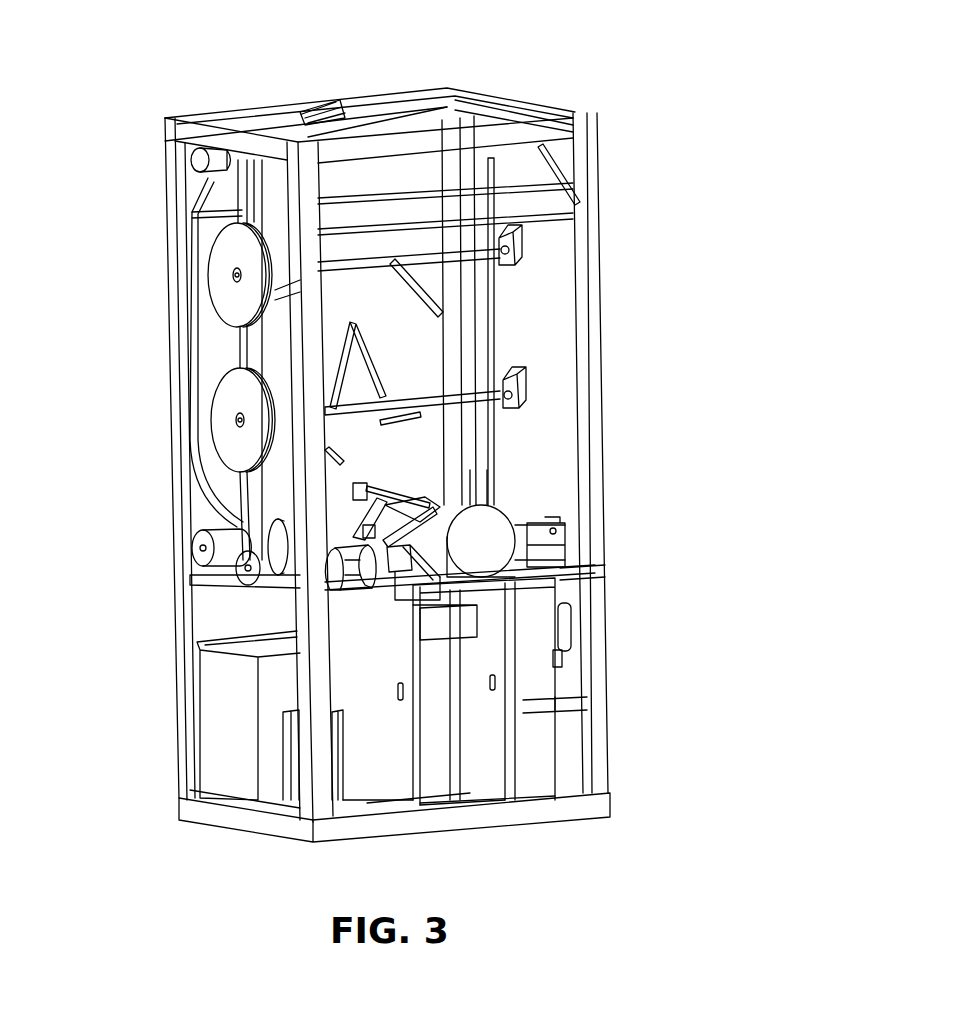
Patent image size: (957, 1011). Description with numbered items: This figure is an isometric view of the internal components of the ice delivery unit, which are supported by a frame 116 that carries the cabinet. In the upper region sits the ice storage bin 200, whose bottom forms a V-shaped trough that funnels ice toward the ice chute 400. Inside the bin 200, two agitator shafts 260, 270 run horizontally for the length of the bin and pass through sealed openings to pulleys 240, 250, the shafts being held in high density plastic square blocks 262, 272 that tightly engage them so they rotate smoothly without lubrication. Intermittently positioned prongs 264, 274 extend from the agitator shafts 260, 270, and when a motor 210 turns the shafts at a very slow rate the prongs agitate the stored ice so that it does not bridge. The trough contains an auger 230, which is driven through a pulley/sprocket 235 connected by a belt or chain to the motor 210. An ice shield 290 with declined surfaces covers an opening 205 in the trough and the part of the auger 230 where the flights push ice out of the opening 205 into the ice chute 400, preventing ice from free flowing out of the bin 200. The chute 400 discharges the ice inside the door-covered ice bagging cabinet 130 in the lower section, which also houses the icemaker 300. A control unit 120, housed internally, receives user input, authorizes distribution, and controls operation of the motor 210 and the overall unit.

The frame 116 is at (163, 117).
The control unit 120 is at (550, 570).
The ice bagging cabinet 130 is at (493, 743).
The ice storage bin 200 is at (218, 325).
The opening 205 is at (520, 528).
The motor 210 is at (200, 157).
The auger 230 is at (368, 558).
The pulley/sprocket 235 is at (300, 565).
The pulley 240 is at (223, 422).
The pulley 250 is at (222, 258).
The agitator shaft 260 is at (487, 392).
The square block 262 is at (533, 400).
The prongs 264 is at (385, 355).
The agitator shaft 270 is at (417, 253).
The square block 272 is at (527, 241).
The prongs 274 is at (433, 310).
The ice shield 290 is at (397, 507).
The icemaker 300 is at (243, 733).
The ice chute 400 is at (398, 548).